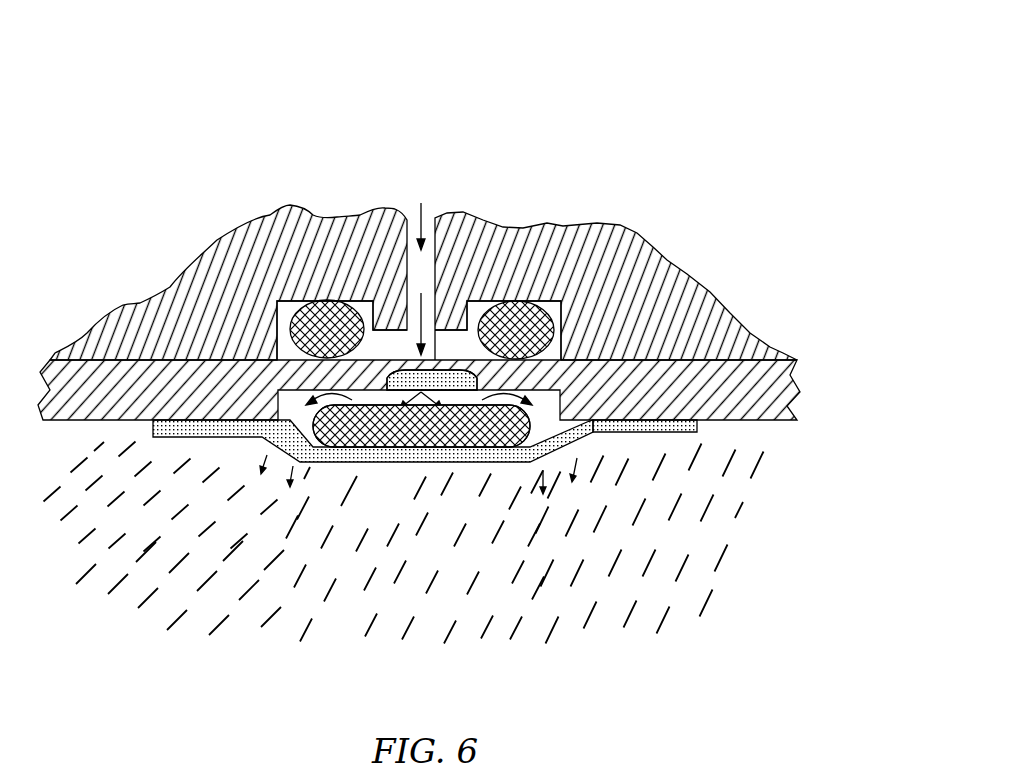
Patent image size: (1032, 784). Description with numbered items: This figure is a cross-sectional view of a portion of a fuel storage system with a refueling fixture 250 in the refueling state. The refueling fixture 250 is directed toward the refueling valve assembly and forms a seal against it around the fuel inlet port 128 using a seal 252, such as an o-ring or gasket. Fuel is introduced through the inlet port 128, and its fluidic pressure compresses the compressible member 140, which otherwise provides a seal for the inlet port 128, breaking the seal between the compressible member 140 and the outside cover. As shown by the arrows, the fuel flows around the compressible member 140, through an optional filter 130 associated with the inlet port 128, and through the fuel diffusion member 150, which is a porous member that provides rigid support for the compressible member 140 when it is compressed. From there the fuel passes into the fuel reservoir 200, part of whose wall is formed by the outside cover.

The fuel inlet port 128 is at (437, 357).
The filter 130 is at (470, 462).
The compressible member 140 is at (388, 462).
The fuel diffusion member 150 is at (683, 430).
The fuel reservoir 200 is at (663, 563).
The refueling fixture 250 is at (665, 258).
The seal 252 is at (566, 300).